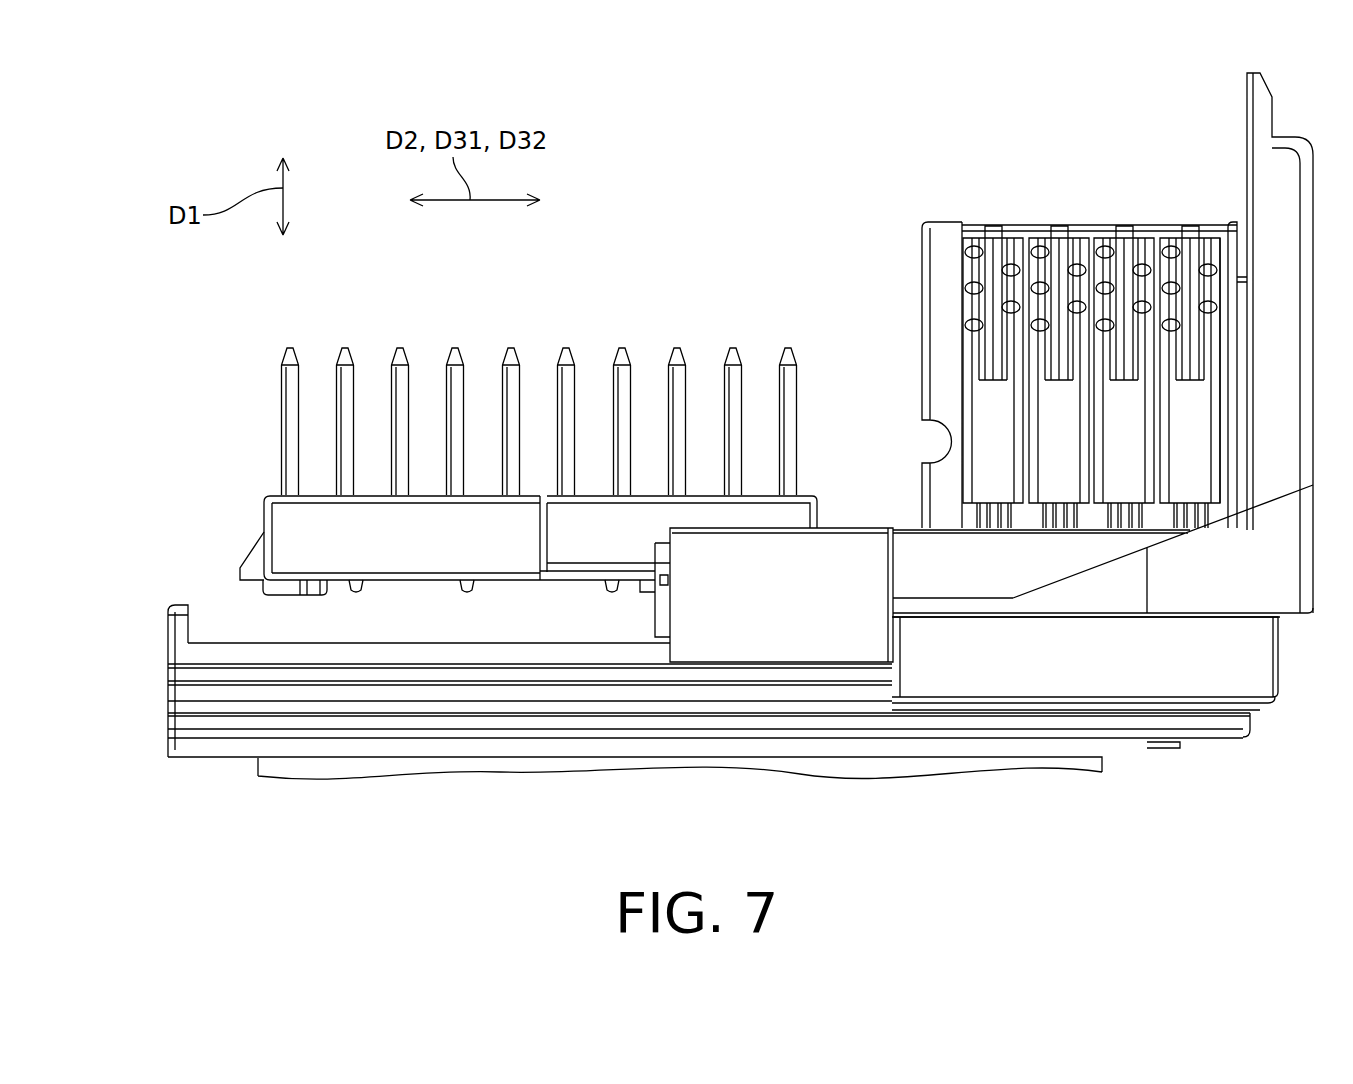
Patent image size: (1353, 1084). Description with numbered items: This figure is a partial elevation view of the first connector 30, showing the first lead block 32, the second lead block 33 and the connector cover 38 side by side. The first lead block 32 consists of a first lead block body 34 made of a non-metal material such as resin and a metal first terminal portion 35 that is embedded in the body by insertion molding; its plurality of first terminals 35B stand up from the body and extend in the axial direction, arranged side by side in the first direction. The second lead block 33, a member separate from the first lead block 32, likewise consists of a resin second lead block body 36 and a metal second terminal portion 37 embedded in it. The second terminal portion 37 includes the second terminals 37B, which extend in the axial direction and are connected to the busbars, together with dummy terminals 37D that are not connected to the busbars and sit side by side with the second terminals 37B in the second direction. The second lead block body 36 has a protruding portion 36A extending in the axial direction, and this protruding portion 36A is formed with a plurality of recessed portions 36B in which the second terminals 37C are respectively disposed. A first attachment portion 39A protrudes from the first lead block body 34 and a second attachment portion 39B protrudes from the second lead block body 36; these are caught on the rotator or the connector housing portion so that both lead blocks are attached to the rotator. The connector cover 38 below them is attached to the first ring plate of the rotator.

The first connector 30 is at (864, 224).
The first lead block 32 is at (251, 458).
The second lead block 33 is at (839, 475).
The first lead block body 34 is at (280, 522).
The first terminal portion 35 is at (273, 340).
The first terminals 35B is at (345, 347).
The second lead block body 36 is at (795, 512).
The protruding portion 36A is at (943, 237).
The recessed portions 36B is at (988, 275).
The second terminal portion 37 is at (806, 338).
The second terminals 37B is at (733, 347).
The second terminals 37C is at (1060, 226).
The dummy terminals 37D is at (622, 347).
The connector cover 38 is at (154, 681).
The first attachment portion 39A is at (255, 565).
The second attachment portion 39B is at (650, 553).